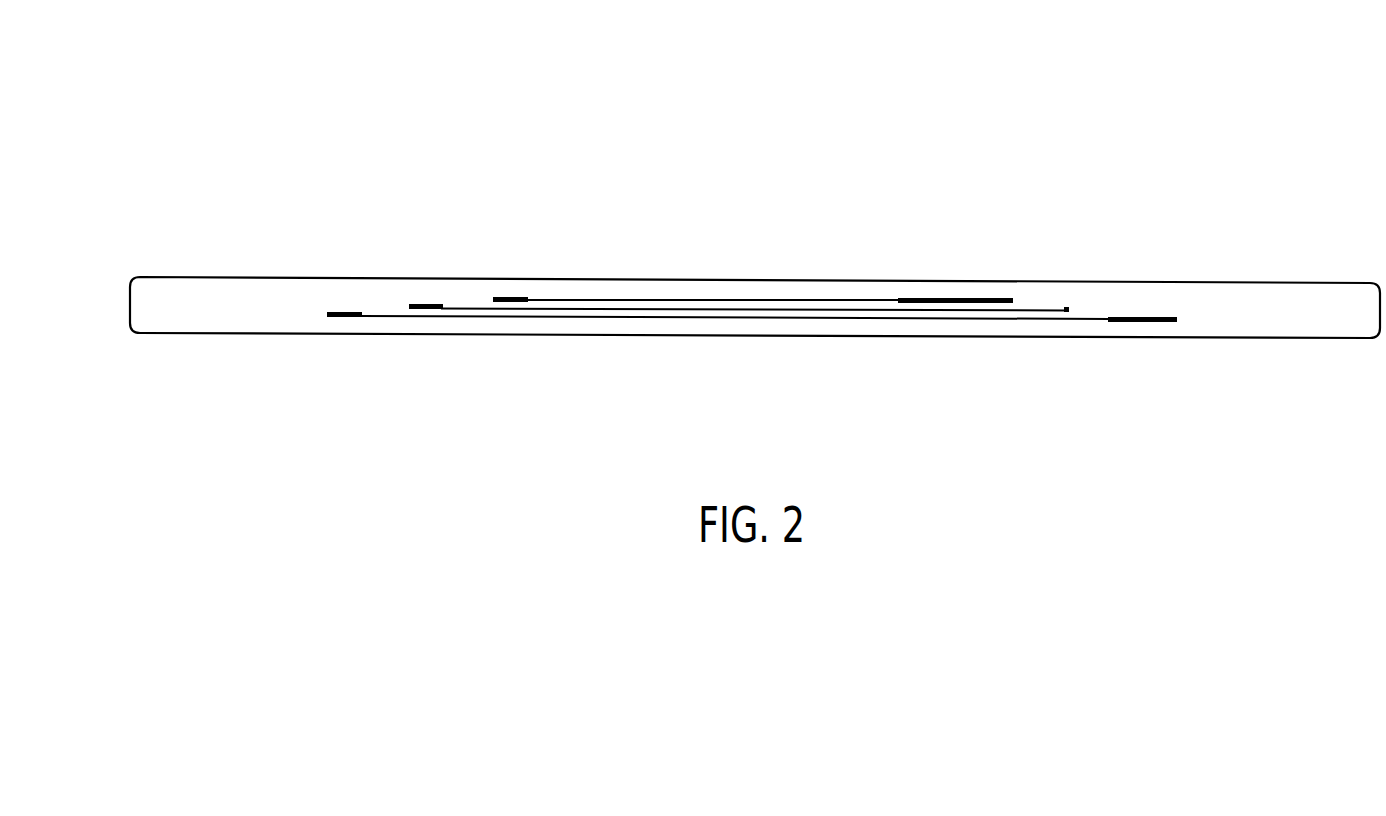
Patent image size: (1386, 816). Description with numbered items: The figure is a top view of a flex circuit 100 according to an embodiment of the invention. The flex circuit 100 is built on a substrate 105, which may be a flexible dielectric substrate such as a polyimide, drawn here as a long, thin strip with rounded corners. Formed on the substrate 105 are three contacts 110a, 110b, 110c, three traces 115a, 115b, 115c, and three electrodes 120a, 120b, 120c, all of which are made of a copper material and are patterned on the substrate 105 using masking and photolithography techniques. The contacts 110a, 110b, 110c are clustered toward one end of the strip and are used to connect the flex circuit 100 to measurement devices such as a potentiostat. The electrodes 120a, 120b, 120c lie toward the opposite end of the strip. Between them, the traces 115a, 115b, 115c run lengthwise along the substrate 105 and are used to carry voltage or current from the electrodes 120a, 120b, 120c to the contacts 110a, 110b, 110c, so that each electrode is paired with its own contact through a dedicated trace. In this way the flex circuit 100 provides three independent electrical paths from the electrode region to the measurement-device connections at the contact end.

The flex circuit 100 is at (258, 76).
The substrate 105 is at (180, 287).
The contact 110a is at (346, 312).
The contact 110b is at (425, 304).
The contact 110c is at (511, 297).
The trace 115a is at (635, 318).
The trace 115b is at (715, 310).
The trace 115c is at (795, 299).
The electrode 120a is at (1144, 318).
The electrode 120b is at (1067, 310).
The electrode 120c is at (978, 299).